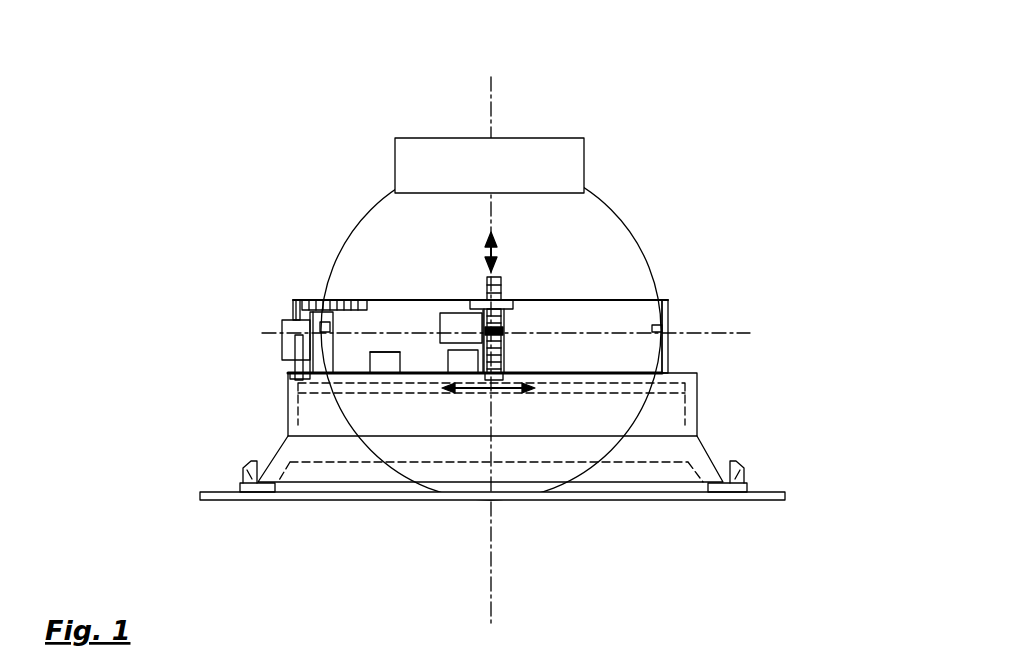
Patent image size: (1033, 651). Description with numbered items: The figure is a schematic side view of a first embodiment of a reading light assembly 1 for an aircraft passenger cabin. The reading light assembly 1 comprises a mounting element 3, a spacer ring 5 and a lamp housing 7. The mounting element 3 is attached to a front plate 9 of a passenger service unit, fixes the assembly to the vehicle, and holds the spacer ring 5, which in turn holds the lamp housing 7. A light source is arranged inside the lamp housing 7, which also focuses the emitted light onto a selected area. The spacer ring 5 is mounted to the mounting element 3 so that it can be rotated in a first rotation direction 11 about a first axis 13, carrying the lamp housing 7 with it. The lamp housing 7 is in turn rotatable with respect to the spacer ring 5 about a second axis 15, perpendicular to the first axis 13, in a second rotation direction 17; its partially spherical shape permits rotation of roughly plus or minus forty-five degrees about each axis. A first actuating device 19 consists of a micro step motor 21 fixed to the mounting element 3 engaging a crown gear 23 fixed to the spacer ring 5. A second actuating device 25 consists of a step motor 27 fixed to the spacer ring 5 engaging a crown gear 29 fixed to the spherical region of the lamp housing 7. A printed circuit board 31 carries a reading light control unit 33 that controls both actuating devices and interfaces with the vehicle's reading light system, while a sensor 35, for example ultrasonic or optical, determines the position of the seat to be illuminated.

The reading light assembly 1 is at (258, 200).
The mounting element 3 is at (680, 427).
The spacer ring 5 is at (673, 347).
The lamp housing 7 is at (522, 215).
The front plate 9 is at (787, 497).
The first rotation direction 11 is at (477, 389).
The first axis 13 is at (492, 132).
The second axis 15 is at (688, 334).
The second rotation direction 17 is at (500, 252).
The first actuating device 19 is at (255, 344).
The micro step motor 21 is at (283, 326).
The crown gear 23 is at (295, 302).
The second actuating device 25 is at (520, 321).
The step motor 27 is at (457, 323).
The crown gear 29 is at (490, 272).
The printed circuit board 31 is at (383, 343).
The reading light control unit 33 is at (460, 362).
The sensor 35 is at (383, 367).